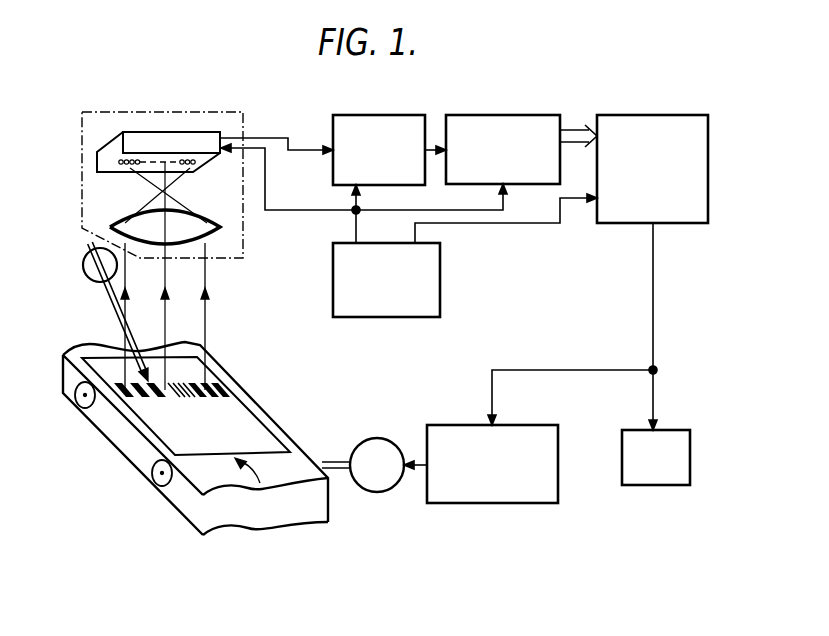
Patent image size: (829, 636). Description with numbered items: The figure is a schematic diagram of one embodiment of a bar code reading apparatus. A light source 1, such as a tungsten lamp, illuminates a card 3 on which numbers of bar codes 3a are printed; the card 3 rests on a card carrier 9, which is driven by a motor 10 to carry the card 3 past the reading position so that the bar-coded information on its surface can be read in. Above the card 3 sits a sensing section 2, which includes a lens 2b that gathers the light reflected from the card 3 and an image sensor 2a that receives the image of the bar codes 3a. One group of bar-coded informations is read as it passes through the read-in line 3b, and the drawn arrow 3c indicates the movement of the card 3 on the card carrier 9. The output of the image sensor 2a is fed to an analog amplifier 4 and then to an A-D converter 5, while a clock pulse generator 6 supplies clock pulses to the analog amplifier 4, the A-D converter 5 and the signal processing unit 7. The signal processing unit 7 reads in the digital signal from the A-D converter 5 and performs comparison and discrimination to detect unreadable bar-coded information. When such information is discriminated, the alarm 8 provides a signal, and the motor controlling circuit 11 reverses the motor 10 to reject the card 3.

The light source 1 is at (87, 268).
The sensing section 2 is at (80, 140).
The image sensor 2a is at (97, 167).
The lens 2b is at (110, 227).
The card 3 is at (260, 432).
The bar codes 3a is at (190, 383).
The read-in line 3b is at (213, 392).
The direction of movement 3c is at (262, 483).
The analog amplifier 4 is at (384, 115).
The A-D converter 5 is at (512, 115).
The clock pulse generator 6 is at (413, 317).
The signal processing unit 7 is at (653, 115).
The alarm 8 is at (652, 485).
The card carrier 9 is at (118, 438).
The motor 10 is at (383, 492).
The motor controlling circuit 11 is at (512, 503).